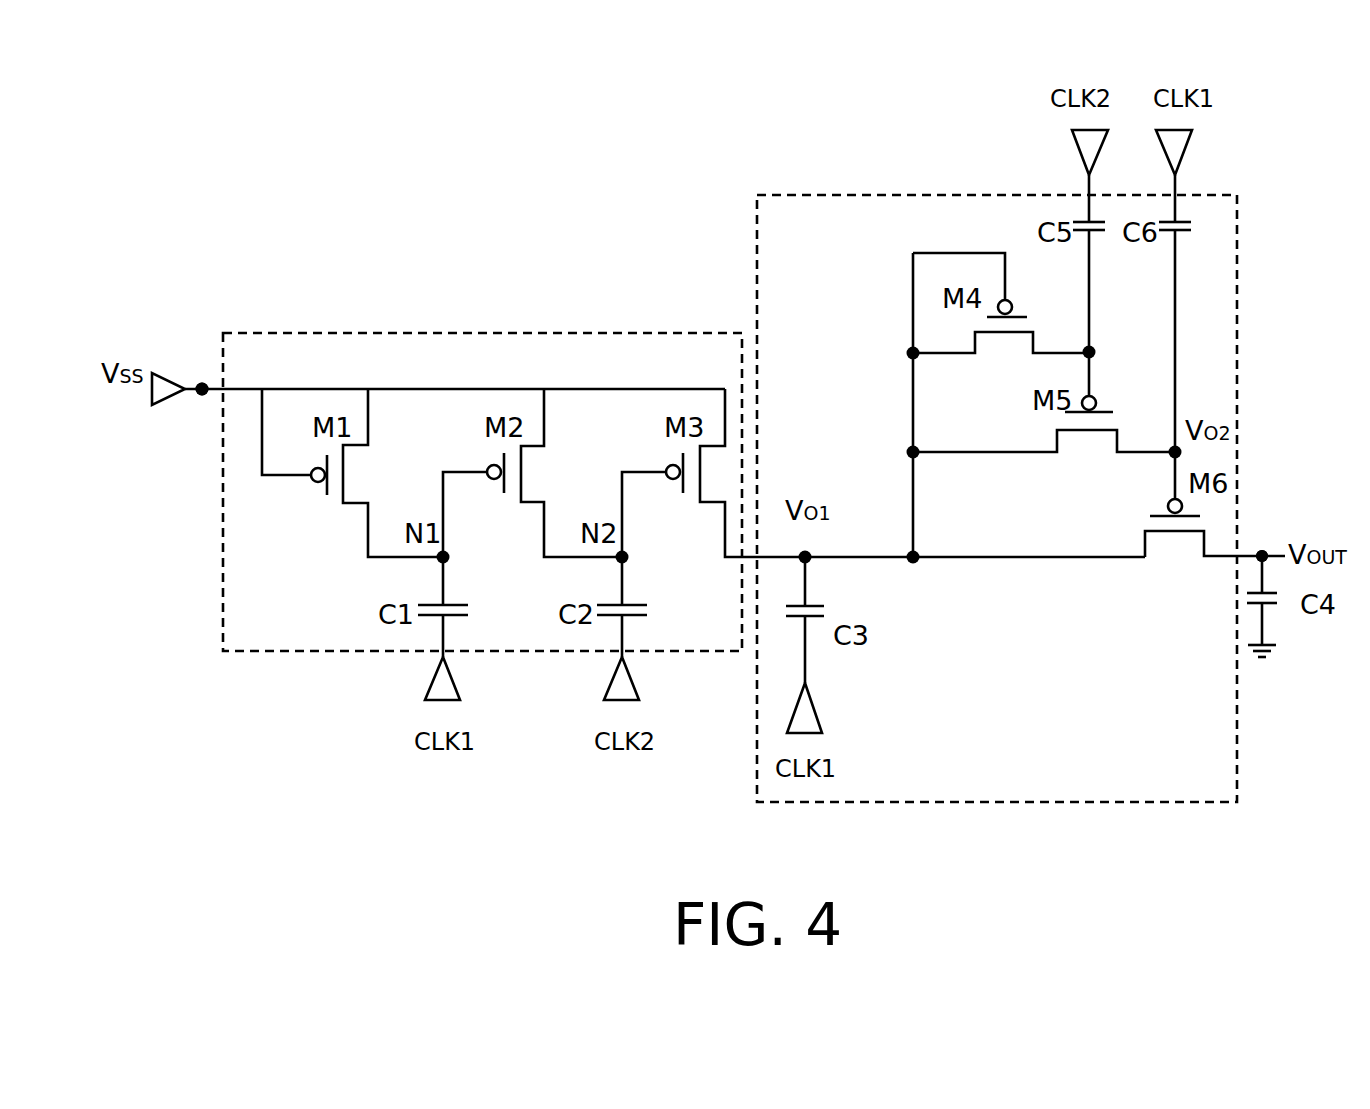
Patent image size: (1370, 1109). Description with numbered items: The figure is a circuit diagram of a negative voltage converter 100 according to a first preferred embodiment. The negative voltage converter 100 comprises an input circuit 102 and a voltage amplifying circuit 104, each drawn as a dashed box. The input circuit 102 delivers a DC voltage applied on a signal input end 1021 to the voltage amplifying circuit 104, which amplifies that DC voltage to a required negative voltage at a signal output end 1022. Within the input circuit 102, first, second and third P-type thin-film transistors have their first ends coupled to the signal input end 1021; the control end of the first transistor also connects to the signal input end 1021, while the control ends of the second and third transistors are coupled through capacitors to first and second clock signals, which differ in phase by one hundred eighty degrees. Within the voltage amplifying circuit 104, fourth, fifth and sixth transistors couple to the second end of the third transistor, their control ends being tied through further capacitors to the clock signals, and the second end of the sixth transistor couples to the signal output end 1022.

The negative voltage converter 100 is at (765, 104).
The input circuit 102 is at (482, 333).
The voltage amplifying circuit 104 is at (1237, 303).
The signal input end 1021 is at (202, 389).
The signal output end 1022 is at (1262, 556).